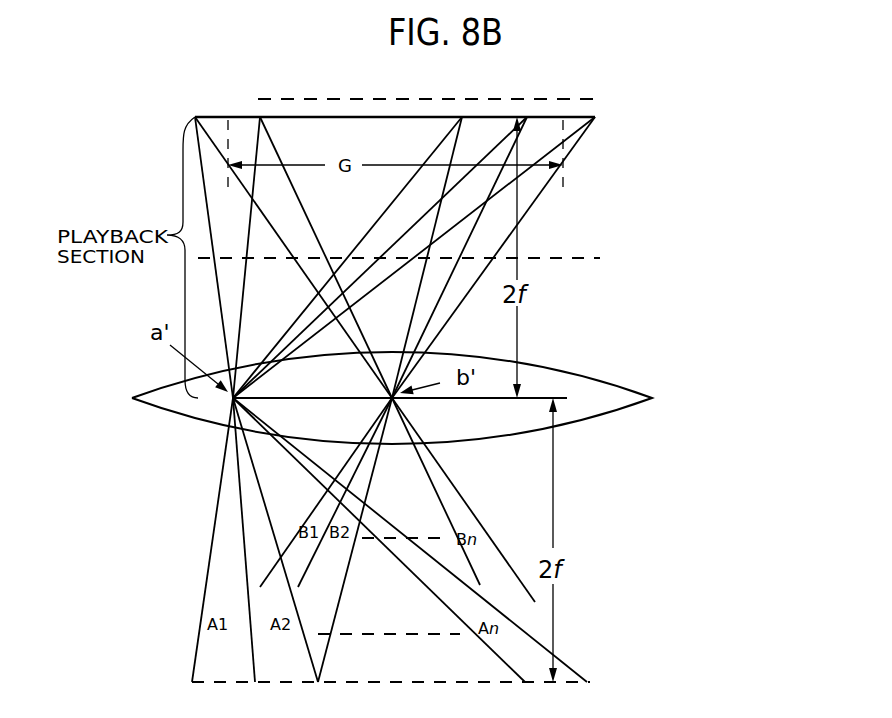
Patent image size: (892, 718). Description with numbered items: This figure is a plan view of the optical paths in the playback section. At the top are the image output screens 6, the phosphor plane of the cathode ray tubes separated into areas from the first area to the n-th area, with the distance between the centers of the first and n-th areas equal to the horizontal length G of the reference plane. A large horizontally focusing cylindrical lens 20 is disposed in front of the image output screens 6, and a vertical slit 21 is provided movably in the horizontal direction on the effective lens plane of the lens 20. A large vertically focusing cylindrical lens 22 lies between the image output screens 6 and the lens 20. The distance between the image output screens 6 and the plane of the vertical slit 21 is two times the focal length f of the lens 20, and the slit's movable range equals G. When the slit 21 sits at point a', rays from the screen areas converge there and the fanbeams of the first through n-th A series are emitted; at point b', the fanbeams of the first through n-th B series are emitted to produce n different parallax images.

The image output screen 6 is at (634, 105).
The horizontally focusing cylindrical lens 20 is at (607, 415).
The vertical slit 21 is at (551, 385).
The vertically focusing cylindrical lens 22 is at (605, 252).